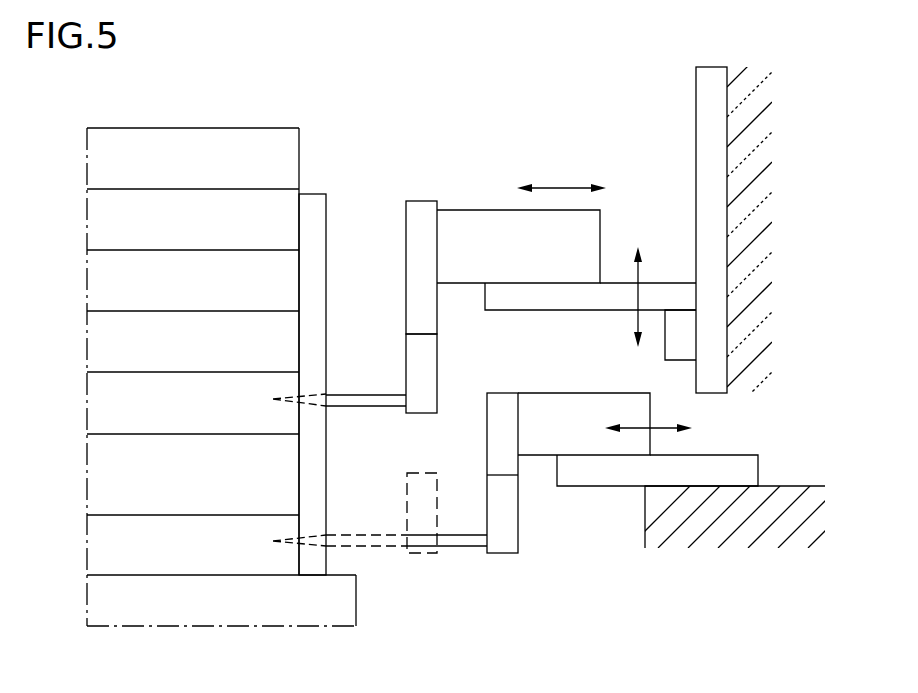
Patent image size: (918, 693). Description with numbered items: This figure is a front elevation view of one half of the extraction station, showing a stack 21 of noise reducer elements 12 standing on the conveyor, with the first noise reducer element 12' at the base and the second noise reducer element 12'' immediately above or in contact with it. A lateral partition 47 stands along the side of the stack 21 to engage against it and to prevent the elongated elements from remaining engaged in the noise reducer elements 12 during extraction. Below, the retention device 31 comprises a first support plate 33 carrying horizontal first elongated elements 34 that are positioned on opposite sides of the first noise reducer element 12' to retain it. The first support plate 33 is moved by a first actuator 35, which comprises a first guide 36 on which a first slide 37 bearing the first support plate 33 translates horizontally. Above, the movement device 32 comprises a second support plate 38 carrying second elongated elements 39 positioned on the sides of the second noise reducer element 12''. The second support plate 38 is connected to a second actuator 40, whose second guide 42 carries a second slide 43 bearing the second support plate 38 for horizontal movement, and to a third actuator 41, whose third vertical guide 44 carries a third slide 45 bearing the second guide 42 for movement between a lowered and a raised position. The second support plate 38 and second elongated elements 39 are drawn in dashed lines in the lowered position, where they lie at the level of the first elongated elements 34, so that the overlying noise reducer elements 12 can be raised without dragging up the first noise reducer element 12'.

The stack 21 is at (203, 108).
The noise reducer elements 12 is at (193, 256).
The first noise reducer element 12' is at (221, 616).
The second noise reducer element 12'' is at (193, 410).
The lateral partitions 47 is at (312, 213).
The second elongated elements 39 is at (347, 400).
The movement device 32 is at (385, 305).
The second support plate 38 is at (422, 366).
The first elongated elements 34 is at (447, 541).
The second slide 43 is at (456, 240).
The second guide 42 is at (612, 285).
The second actuator 40 is at (585, 130).
The third vertical guide 44 is at (707, 95).
The third actuator 41 is at (748, 210).
The third slide 45 is at (680, 322).
The retention device 31 is at (540, 537).
The first support plate 33 is at (507, 556).
The first slide 37 is at (590, 415).
The first guide 36 is at (733, 478).
The first actuator 35 is at (748, 432).